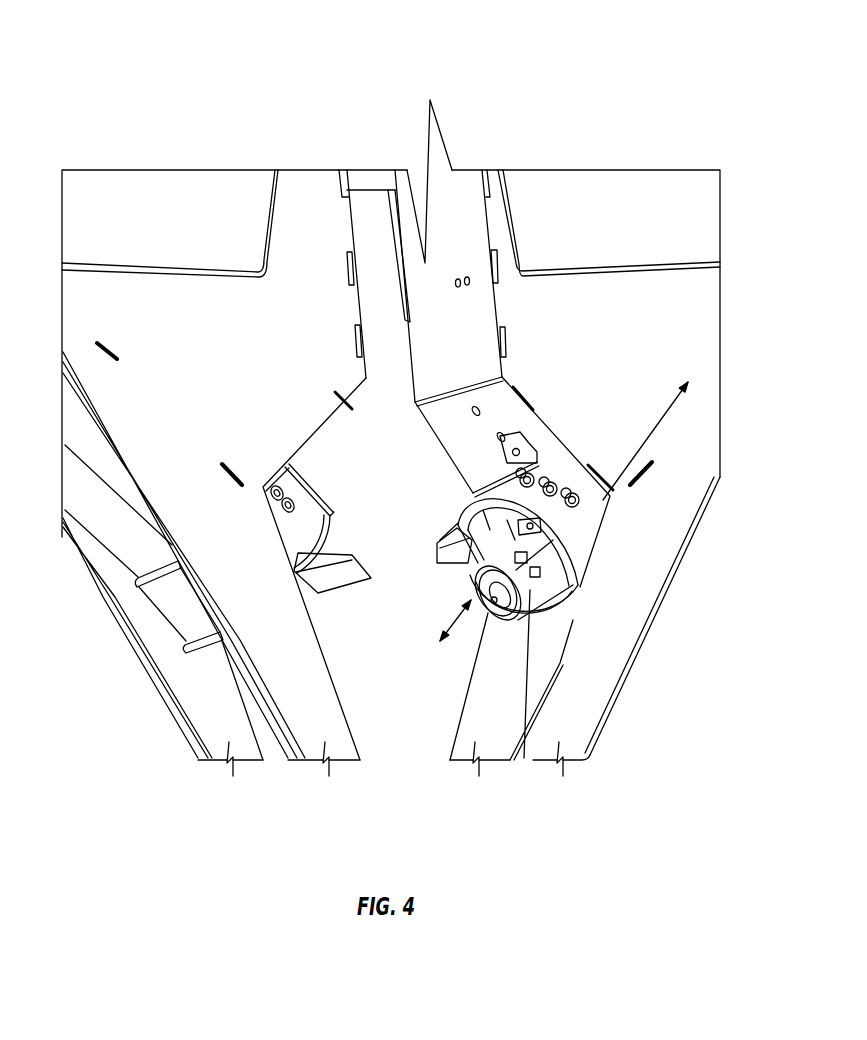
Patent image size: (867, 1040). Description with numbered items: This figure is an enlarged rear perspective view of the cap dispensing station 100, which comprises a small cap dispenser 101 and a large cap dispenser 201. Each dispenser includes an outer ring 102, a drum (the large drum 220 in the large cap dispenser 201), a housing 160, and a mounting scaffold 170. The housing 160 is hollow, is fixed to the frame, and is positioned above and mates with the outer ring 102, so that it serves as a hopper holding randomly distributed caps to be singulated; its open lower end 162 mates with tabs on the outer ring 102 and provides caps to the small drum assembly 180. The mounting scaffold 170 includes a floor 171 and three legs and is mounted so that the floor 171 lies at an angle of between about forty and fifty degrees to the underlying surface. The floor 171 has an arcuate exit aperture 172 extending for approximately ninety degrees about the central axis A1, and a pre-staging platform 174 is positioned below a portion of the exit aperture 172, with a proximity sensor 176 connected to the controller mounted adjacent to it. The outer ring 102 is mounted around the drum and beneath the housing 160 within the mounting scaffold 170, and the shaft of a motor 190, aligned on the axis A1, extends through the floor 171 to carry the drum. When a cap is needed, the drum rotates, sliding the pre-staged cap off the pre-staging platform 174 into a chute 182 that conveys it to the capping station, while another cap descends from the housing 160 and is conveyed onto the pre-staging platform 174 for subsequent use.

The cap dispensing station 100 is at (386, 760).
The small cap dispenser 101 is at (466, 645).
The outer ring 102 is at (578, 520).
The housing 160 is at (716, 377).
The lower end 162 is at (540, 452).
The mounting scaffold 170 is at (528, 462).
The floor 171 is at (562, 632).
The exit aperture 172 is at (441, 640).
The pre-staging platform 174 is at (566, 618).
The proximity sensor 176 is at (565, 525).
The small drum assembly 180 is at (460, 489).
The chute 182 is at (442, 572).
The motor 190 is at (524, 758).
The large cap dispenser 201 is at (316, 612).
The large drum 220 is at (300, 545).
The central axis A1 is at (658, 438).